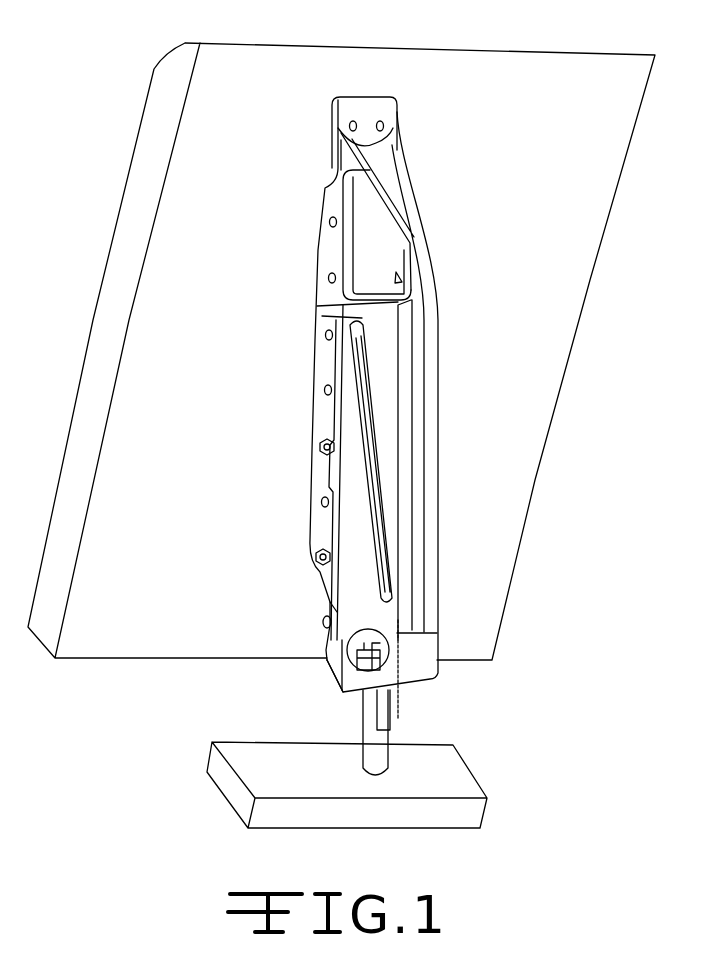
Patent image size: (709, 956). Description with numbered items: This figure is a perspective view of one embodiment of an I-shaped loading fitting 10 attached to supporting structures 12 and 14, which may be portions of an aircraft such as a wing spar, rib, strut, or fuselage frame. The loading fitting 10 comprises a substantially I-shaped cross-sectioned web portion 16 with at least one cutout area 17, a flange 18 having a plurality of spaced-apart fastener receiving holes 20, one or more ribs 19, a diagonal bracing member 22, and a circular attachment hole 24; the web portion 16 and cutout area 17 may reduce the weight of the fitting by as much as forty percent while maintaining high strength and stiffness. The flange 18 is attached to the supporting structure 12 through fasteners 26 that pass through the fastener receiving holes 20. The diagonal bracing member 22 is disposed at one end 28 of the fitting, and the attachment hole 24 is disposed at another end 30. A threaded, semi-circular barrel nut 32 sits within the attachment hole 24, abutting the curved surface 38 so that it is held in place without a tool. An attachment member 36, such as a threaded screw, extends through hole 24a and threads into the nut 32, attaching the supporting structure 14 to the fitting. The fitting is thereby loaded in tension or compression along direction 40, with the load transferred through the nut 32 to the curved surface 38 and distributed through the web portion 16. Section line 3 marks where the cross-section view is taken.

The loading fitting 10 is at (435, 352).
The supporting structure 12 is at (157, 130).
The supporting structure 14 is at (460, 788).
The web portion 16 is at (362, 230).
The cutout area 17 is at (390, 360).
The flange 18 is at (326, 258).
The ribs 19 is at (398, 473).
The fastener receiving holes 20 is at (317, 382).
The diagonal bracing member 22 is at (404, 228).
The attachment hole 24 is at (398, 625).
The hole 24a is at (390, 730).
The fasteners 26 is at (312, 442).
The end 28 is at (383, 175).
The end 30 is at (430, 640).
The nut 32 is at (398, 688).
The attachment member 36 is at (366, 715).
The curved surface 38 is at (321, 640).
The direction 40 is at (400, 435).
The line 3- 3 is at (290, 418).